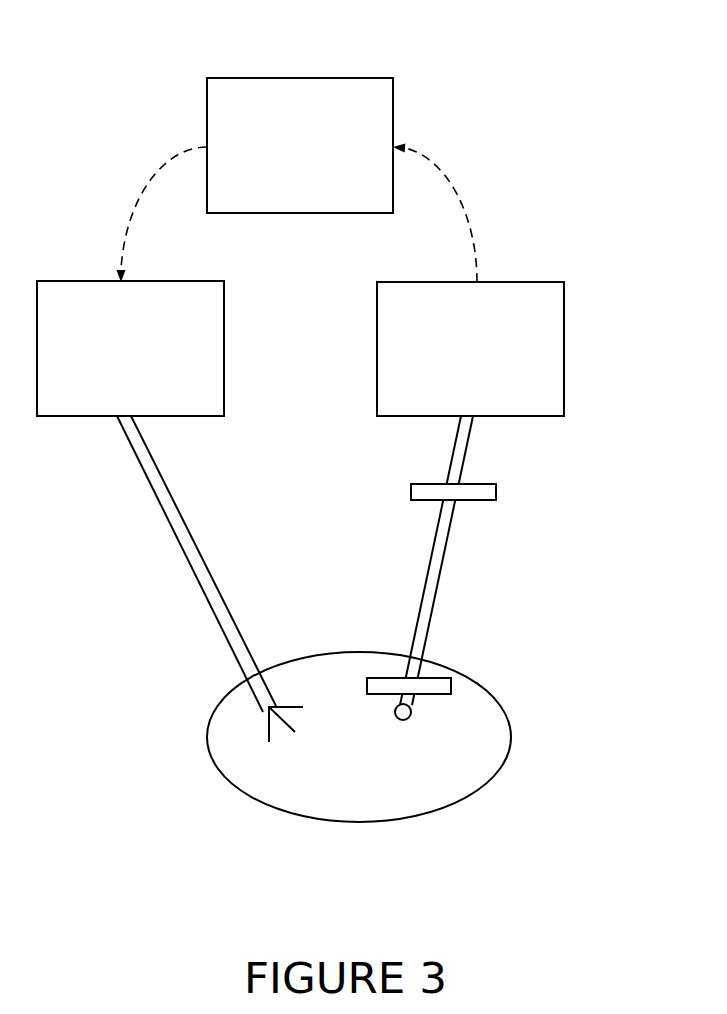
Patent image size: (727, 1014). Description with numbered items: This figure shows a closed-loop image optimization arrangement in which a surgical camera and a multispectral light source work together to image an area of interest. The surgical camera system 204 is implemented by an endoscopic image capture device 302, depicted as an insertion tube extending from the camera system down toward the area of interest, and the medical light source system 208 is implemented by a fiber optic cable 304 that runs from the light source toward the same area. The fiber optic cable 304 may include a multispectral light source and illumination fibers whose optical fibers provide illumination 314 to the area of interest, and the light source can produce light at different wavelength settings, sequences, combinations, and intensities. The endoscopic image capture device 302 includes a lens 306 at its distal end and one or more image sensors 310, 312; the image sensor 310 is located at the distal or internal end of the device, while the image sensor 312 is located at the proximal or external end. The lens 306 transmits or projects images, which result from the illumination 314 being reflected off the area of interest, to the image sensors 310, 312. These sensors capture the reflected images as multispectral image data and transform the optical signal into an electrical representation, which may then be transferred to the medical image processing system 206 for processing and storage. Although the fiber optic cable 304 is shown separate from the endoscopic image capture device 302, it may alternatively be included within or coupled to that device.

The medical image processing system 206 is at (282, 196).
The medical light source system 208 is at (113, 386).
The surgical camera system 204 is at (452, 386).
The fiber optic cable 304 is at (208, 552).
The endoscopic image capture device 302 is at (445, 585).
The image sensor 312 is at (498, 498).
The image sensor 310 is at (452, 686).
The lens 306 is at (414, 717).
The illumination 314 is at (268, 731).